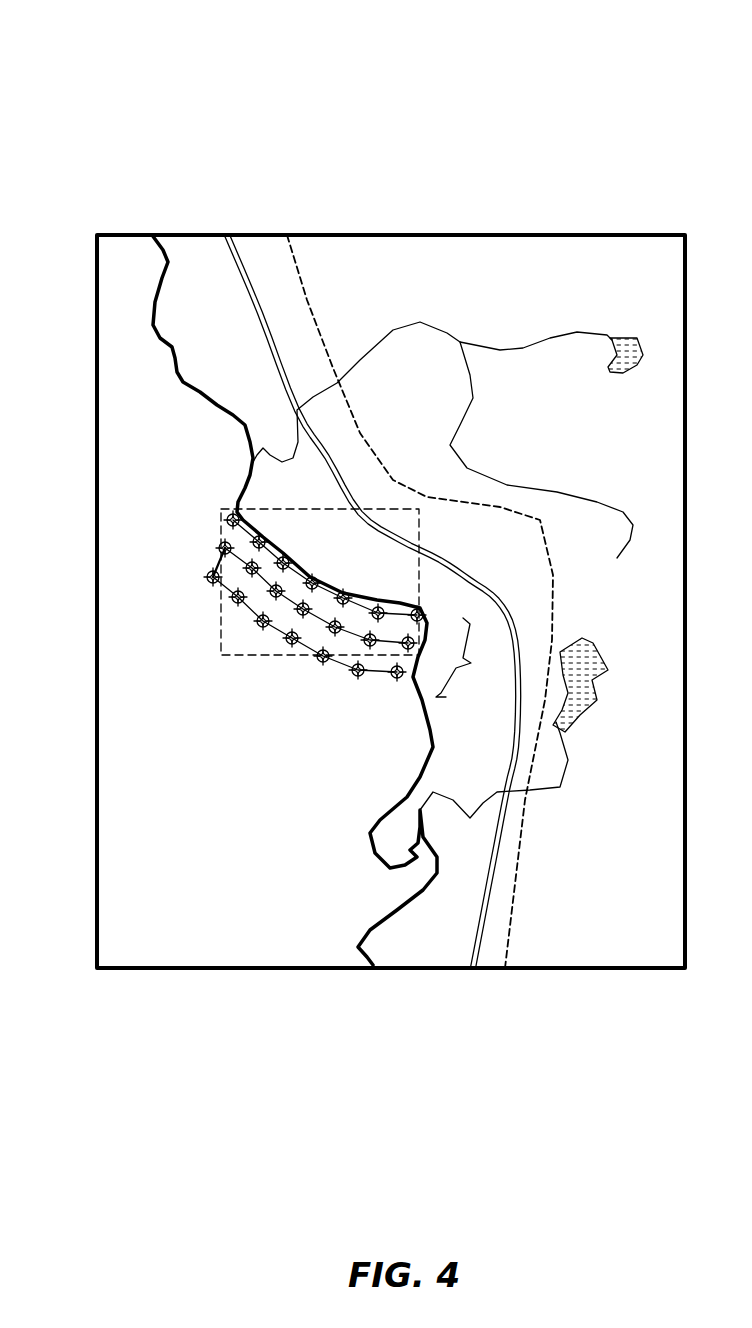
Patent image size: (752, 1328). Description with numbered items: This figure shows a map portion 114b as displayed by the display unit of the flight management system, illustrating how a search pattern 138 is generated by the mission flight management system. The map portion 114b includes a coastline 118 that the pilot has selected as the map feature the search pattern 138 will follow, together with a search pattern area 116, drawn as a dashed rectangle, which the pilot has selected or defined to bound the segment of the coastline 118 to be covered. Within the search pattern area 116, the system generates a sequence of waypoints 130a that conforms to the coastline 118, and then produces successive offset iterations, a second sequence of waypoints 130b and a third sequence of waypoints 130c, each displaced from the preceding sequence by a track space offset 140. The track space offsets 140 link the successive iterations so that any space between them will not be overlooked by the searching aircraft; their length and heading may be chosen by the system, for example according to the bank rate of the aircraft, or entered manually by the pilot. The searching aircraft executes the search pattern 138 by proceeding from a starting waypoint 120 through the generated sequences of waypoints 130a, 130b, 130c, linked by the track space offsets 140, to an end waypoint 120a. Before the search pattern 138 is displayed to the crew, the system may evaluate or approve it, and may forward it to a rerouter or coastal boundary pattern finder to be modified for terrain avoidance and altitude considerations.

The map portion 114b is at (88, 70).
The search pattern area 116 is at (245, 658).
The coastline 118 is at (385, 815).
The starting waypoint 120 is at (269, 585).
The end waypoint 120a is at (395, 690).
The generated sequence of waypoints 130a is at (210, 523).
The offset sequence of waypoints 130b is at (207, 542).
The offset sequence of waypoints 130c is at (276, 648).
The search pattern 138 is at (473, 657).
The track space offset 140 is at (215, 560).